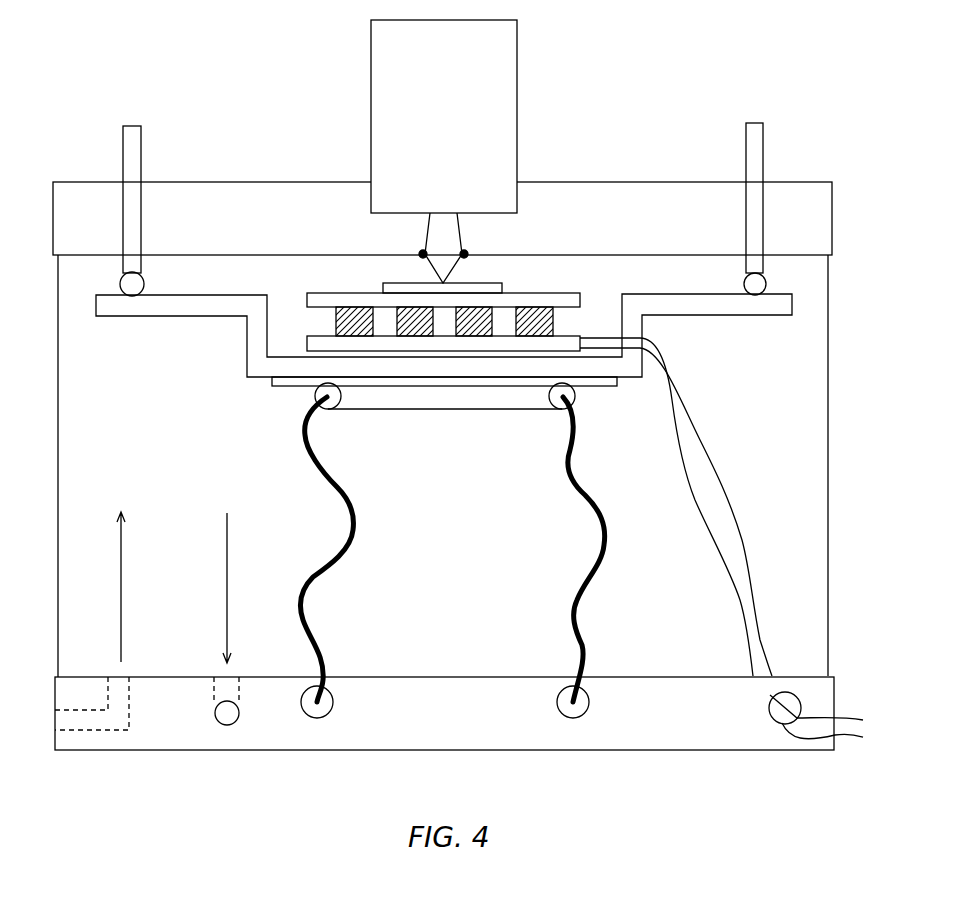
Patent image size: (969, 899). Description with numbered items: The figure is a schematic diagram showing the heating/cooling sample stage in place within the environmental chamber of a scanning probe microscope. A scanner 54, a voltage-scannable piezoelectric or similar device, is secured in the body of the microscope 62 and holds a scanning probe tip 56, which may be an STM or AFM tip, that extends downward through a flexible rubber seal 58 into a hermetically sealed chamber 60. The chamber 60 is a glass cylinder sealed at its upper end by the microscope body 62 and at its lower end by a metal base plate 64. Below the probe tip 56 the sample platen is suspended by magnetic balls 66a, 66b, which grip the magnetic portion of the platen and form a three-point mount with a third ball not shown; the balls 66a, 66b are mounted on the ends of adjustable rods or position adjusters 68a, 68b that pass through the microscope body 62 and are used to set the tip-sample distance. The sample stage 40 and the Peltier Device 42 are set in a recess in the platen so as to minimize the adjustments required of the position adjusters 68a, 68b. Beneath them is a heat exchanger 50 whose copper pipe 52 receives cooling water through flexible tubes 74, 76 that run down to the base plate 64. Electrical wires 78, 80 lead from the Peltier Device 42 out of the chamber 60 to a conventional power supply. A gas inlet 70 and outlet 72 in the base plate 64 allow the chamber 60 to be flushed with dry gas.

The sample stage 40 is at (502, 289).
The Peltier Device 42 is at (553, 322).
The heat exchanger 50 is at (588, 386).
The copper pipe 52 is at (444, 400).
The scanner 54 is at (457, 129).
The scanning probe tip 56 is at (448, 275).
The flexible rubber seal 58 is at (465, 254).
The hermetically sealed chamber 60 is at (820, 467).
The body of the microscope 62 is at (795, 187).
The metal base plate 64 is at (443, 742).
The magnetic ball 66a is at (137, 288).
The magnetic ball 66b is at (750, 285).
The position adjuster 68a is at (137, 227).
The position adjuster 68b is at (750, 225).
The gas inlet pipe 70 is at (55, 713).
The gas outlet pipe 72 is at (227, 722).
The flexible tube 74 is at (357, 537).
The flexible tube 76 is at (605, 537).
The electrical wire 78 is at (677, 462).
The electrical wire 80 is at (712, 460).